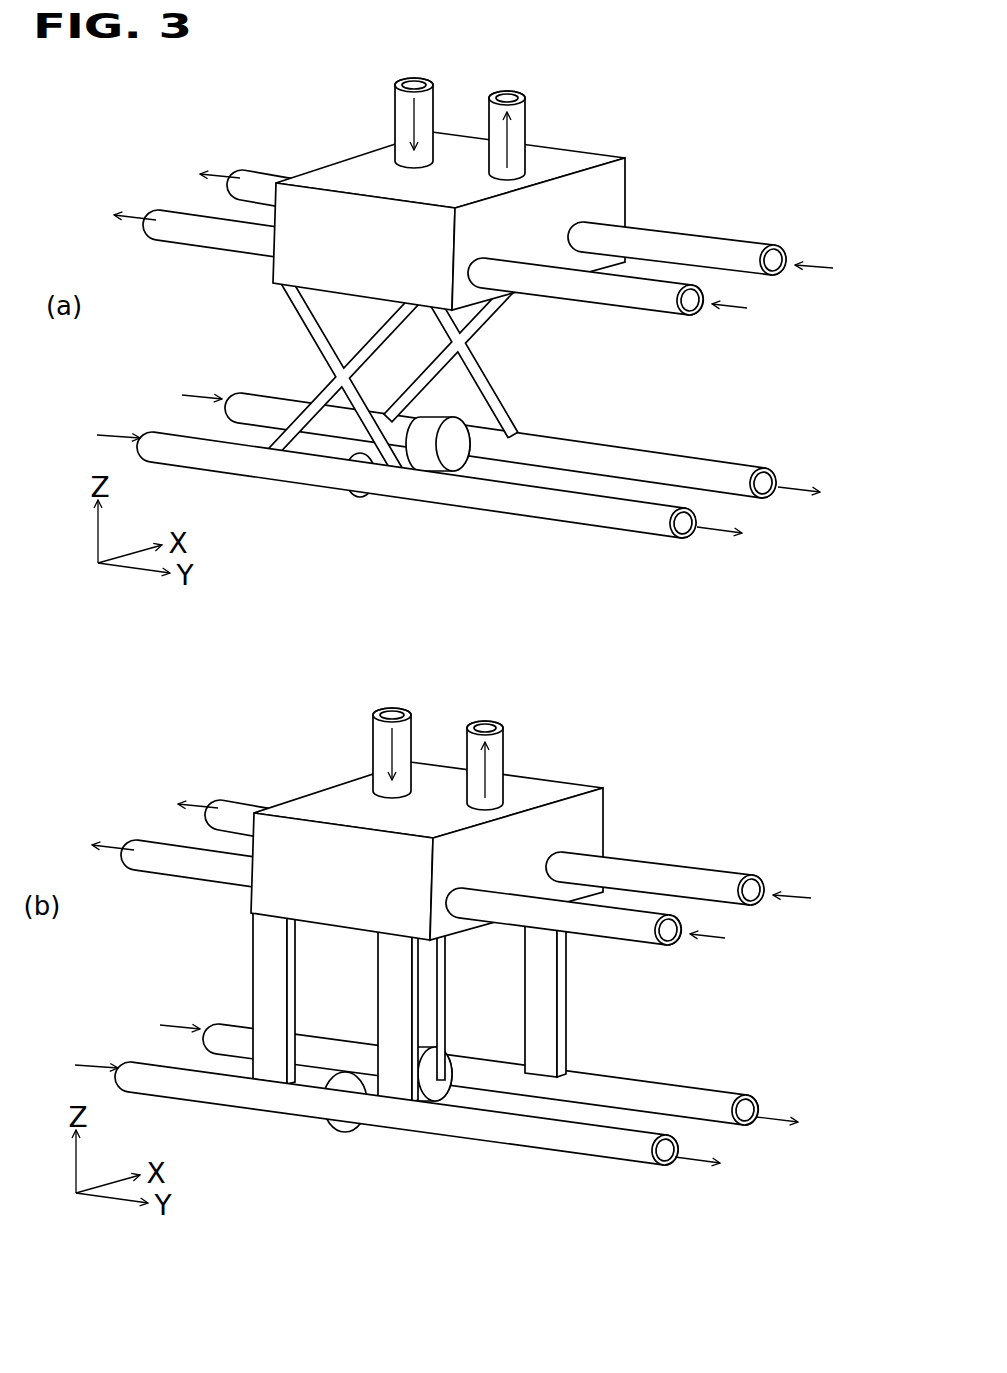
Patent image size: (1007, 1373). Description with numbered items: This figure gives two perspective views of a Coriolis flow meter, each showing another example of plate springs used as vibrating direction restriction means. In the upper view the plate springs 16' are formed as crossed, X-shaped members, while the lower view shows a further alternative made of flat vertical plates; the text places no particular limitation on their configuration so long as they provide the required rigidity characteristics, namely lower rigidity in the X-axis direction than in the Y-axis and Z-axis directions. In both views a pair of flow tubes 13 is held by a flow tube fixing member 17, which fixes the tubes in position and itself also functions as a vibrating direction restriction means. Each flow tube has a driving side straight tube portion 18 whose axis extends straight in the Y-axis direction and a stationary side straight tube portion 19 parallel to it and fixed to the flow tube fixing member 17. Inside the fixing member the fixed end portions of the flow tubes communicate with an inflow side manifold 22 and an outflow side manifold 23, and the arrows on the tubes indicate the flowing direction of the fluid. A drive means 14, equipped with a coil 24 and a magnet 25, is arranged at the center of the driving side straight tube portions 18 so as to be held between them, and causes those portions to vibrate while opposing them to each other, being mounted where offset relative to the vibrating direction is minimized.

The flow tube 13 is at (730, 454).
The drive means 14 is at (477, 468).
The plate spring 16' is at (395, 358).
The flow tube fixing member 17 is at (592, 153).
The driving side straight tube portion 18 is at (730, 490).
The stationary side straight tube portion 19 is at (705, 240).
The inflow side manifold 22 is at (395, 115).
The outflow side manifold 23 is at (530, 118).
The coil 24 is at (450, 442).
The magnet 25 is at (362, 458).